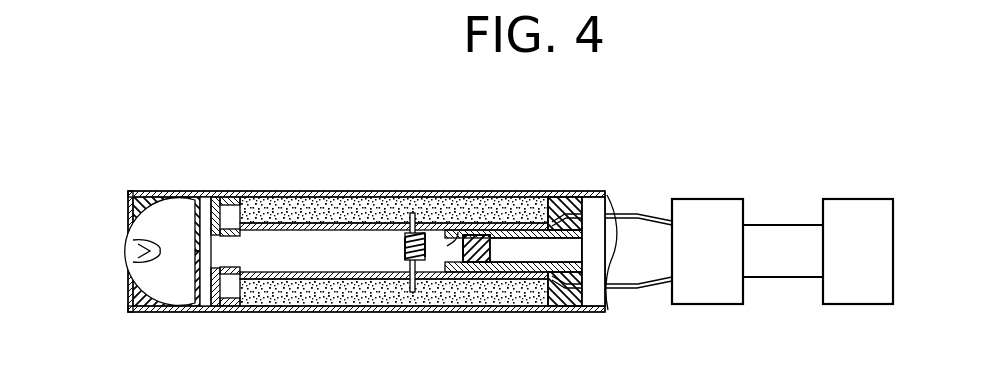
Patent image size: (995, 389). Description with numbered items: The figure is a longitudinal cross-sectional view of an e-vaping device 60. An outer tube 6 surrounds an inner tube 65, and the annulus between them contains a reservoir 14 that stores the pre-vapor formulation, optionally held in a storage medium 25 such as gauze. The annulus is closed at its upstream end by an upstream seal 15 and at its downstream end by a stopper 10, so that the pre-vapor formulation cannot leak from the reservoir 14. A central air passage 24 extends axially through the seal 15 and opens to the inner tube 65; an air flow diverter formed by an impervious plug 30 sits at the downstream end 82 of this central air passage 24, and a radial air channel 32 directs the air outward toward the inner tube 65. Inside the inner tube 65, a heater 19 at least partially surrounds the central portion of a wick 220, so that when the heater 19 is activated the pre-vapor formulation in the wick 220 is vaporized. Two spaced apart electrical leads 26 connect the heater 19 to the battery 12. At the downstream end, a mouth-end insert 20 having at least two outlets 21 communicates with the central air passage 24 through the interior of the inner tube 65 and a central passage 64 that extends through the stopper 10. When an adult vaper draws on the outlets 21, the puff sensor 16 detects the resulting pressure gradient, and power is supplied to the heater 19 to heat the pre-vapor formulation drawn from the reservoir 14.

The outer tube 6 is at (368, 191).
The stopper 10 is at (233, 285).
The battery 12 is at (707, 199).
The reservoir 14 is at (268, 247).
The upstream seal 15 is at (570, 312).
The puff sensor 16 is at (880, 199).
The heater 19 is at (402, 262).
The mouth-end insert 20 is at (153, 191).
The outlets 21 is at (142, 280).
The central air passage 24 is at (565, 247).
The storage medium 25 is at (284, 225).
The electrical leads 26 is at (505, 223).
The impervious plug 30 is at (458, 232).
The radial air channel 32 is at (508, 262).
The e-vaping device 60 is at (542, 146).
The central passage 64 is at (233, 247).
The inner tube 65 is at (284, 312).
The downstream end 82 is at (462, 268).
The wick 220 is at (398, 213).